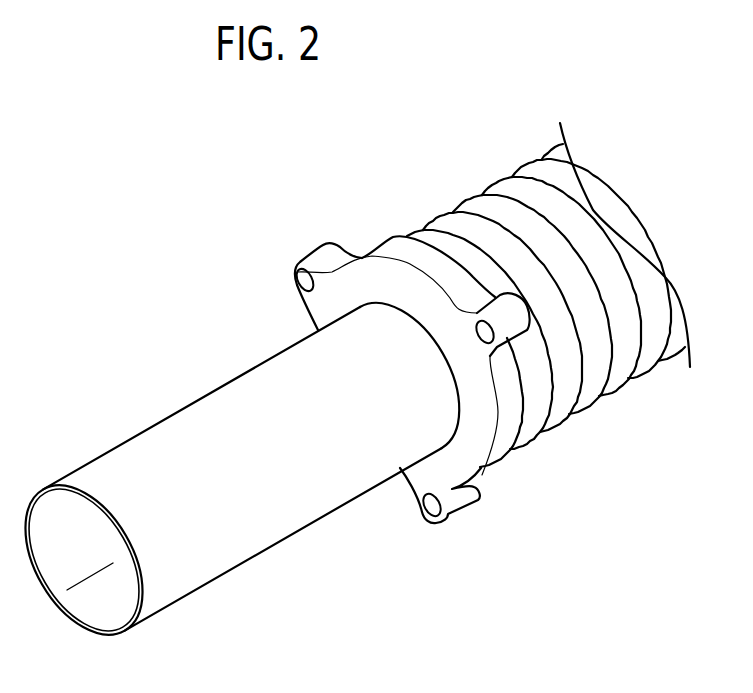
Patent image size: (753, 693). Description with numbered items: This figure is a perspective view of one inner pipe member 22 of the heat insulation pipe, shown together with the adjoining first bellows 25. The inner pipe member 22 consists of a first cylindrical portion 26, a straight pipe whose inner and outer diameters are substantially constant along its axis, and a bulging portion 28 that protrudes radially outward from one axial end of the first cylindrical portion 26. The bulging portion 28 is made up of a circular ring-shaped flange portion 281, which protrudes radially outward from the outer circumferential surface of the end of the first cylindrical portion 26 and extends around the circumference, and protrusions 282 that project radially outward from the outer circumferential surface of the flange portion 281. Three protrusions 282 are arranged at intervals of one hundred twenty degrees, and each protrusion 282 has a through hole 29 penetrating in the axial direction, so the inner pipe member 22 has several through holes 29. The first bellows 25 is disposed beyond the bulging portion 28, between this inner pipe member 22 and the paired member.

The inner pipe member 22 is at (230, 479).
The first bellows 25 is at (491, 180).
The first cylindrical portion 26 is at (254, 530).
The bulging portion 28 is at (439, 383).
The flange portion 281 is at (470, 456).
The protrusion 282 is at (323, 257).
The through hole 29 is at (303, 281).